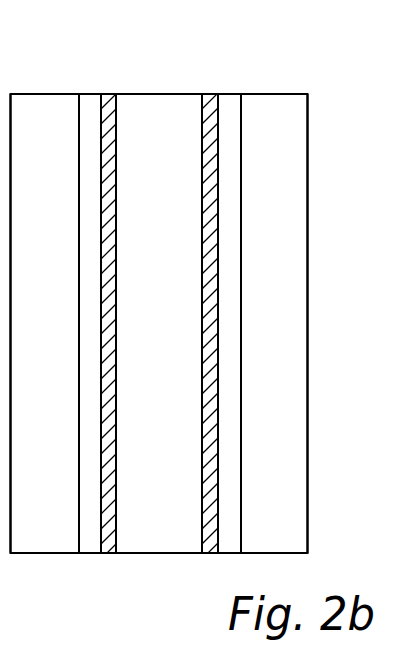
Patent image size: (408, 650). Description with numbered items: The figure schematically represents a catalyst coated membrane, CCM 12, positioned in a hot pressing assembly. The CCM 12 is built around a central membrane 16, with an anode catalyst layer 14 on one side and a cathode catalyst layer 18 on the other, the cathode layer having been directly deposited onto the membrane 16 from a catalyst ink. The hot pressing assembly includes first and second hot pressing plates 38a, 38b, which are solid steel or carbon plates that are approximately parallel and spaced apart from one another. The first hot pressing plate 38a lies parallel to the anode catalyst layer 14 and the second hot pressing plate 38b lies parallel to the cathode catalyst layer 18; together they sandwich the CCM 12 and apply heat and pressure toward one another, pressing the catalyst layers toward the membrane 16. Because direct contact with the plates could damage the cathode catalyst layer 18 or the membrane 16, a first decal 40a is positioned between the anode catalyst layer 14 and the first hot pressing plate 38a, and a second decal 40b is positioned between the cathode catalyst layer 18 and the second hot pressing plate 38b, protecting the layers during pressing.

The catalyst coated membrane (CCM) 12 is at (134, 556).
The anode catalyst layer 14 is at (106, 94).
The membrane 16 is at (170, 267).
The cathode catalyst layer 18 is at (209, 94).
The first hot pressing plate 38a is at (62, 273).
The second hot pressing plate 38b is at (293, 283).
The first decal 40a is at (86, 94).
The second decal 40b is at (229, 94).